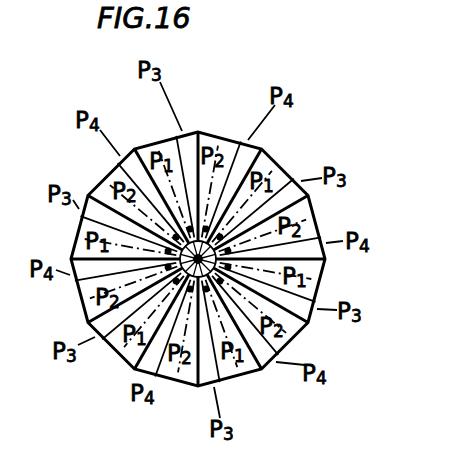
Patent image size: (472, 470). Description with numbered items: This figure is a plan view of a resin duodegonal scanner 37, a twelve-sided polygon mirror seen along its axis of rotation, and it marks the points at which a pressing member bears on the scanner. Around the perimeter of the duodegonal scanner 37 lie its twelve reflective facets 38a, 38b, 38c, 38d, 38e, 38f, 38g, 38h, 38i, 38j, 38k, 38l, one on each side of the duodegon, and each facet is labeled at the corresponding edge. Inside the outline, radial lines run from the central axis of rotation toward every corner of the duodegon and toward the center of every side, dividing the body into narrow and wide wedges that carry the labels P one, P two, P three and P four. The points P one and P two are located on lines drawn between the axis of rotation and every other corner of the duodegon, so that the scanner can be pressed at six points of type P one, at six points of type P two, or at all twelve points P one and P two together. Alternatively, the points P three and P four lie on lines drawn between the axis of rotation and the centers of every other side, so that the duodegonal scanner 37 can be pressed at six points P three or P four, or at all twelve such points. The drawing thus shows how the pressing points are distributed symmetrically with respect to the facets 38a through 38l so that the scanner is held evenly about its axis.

The resin duodegonal scanner 37 is at (208, 75).
The reflective facet 38a is at (228, 136).
The reflective facet 38b is at (292, 167).
The reflective facet 38c is at (318, 205).
The reflective facet 38d is at (328, 274).
The reflective facet 38e is at (312, 333).
The reflective facet 38f is at (258, 376).
The reflective facet 38g is at (183, 388).
The reflective facet 38h is at (122, 362).
The reflective facet 38i is at (75, 302).
The reflective facet 38j is at (73, 240).
The reflective facet 38k is at (101, 179).
The reflective facet 38l is at (174, 136).